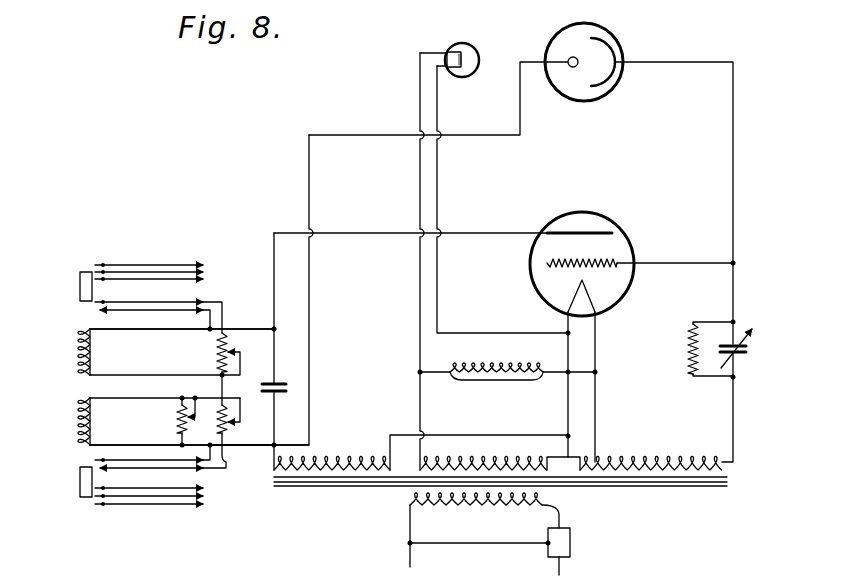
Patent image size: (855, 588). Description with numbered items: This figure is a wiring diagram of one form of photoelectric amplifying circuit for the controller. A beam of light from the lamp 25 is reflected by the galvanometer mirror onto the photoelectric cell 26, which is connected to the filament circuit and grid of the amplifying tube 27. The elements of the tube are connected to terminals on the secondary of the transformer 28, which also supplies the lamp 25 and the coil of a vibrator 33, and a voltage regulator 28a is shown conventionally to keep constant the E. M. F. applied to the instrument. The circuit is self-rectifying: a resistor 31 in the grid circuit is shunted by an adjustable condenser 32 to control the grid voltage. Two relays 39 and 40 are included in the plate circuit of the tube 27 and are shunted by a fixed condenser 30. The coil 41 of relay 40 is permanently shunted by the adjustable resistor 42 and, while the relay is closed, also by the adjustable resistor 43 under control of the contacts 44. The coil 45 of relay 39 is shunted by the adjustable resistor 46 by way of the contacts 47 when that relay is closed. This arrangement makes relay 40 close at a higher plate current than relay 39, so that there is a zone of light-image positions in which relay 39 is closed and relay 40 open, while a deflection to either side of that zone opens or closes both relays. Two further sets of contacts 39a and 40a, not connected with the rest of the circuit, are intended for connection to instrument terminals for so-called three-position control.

The lamp 25 is at (447, 46).
The photoelectric cell 26 is at (623, 47).
The amplifying tube 27 is at (632, 252).
The transformer 28 is at (637, 491).
The voltage regulator 28a is at (574, 548).
The fixed condenser 30 is at (285, 378).
The resistor 31 is at (692, 352).
The adjustable condenser 32 is at (748, 359).
The vibrator 33 is at (490, 366).
The relay 39 is at (182, 352).
The contacts 39a is at (95, 266).
The relay 40 is at (182, 421).
The contacts 40a is at (90, 505).
The coil of relay 40 41 is at (85, 432).
The adjustable resistor 42 is at (178, 426).
The adjustable resistor 43 is at (229, 435).
The contacts 44 is at (92, 461).
The coil of relay 39 45 is at (83, 358).
The adjustable resistor 46 is at (229, 340).
The contacts 47 is at (95, 310).